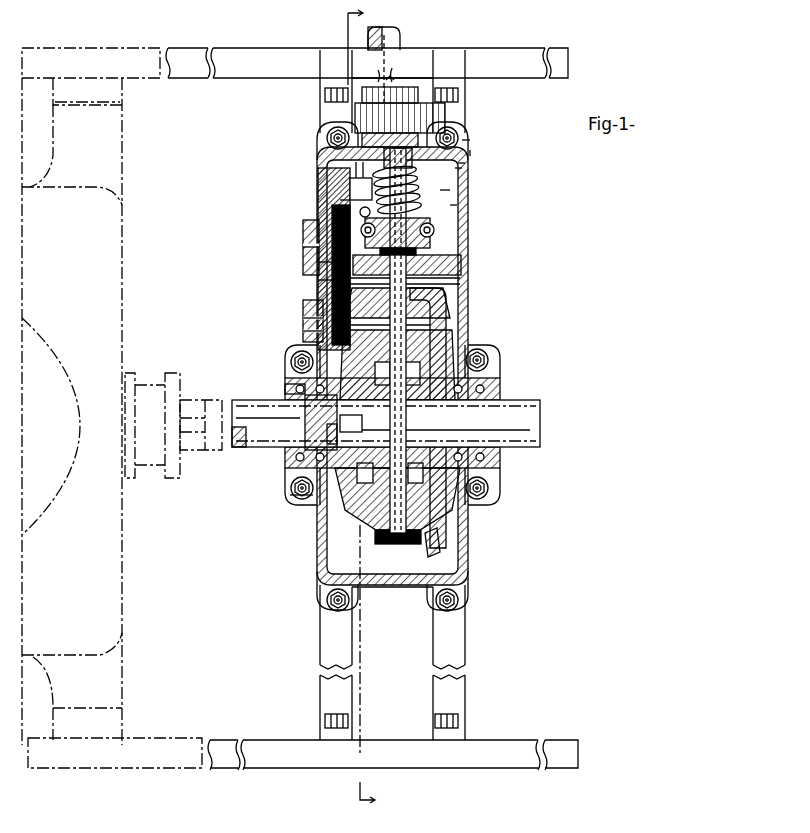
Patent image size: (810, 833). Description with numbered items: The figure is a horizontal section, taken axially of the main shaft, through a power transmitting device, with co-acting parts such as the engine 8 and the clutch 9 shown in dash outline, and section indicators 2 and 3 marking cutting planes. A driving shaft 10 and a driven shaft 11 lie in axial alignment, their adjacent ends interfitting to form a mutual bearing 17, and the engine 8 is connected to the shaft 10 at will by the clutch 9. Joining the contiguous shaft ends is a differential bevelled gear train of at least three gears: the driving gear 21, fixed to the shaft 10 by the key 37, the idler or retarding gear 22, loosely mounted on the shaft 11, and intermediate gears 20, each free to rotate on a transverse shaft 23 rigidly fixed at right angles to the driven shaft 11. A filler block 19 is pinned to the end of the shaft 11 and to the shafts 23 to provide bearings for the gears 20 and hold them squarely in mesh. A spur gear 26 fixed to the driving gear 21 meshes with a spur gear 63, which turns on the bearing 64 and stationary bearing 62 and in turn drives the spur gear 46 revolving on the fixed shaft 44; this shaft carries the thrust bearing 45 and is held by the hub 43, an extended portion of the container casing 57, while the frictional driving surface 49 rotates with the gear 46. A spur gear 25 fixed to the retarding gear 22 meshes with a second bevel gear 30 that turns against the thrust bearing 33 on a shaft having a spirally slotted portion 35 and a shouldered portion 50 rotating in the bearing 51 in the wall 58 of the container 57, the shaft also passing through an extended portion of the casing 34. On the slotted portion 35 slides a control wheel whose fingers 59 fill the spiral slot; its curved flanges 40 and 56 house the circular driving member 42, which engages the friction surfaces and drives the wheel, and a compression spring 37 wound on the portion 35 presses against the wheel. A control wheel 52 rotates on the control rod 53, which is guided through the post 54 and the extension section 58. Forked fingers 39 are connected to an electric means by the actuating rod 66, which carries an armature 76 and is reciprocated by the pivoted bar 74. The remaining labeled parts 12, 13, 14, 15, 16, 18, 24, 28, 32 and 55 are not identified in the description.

The section line 2- 2 is at (365, 44).
The section line 3- 3 is at (375, 668).
The internal combustion engine 8 is at (117, 578).
The clutch 9 is at (205, 455).
The driving shaft 10 is at (262, 448).
The driven shaft 11 is at (538, 446).
The lower flange plate 12 is at (494, 462).
The bolts 13 is at (497, 383).
The nuts 14 is at (292, 483).
The posts 15 is at (465, 636).
The cross beam 16 is at (497, 76).
The mutual bearing 17 is at (358, 429).
The post nuts 18 is at (448, 102).
The filler block 19 is at (485, 353).
The intermediate driving gear 20 is at (313, 550).
The driving gear 21 is at (363, 523).
The idler gear 22 is at (455, 346).
The transverse shaft 23 is at (397, 534).
The housing bottom lugs 24 is at (318, 562).
The spur gear 25 is at (462, 562).
The spur gear 26 is at (313, 497).
The upper flange plate 28 is at (500, 392).
The second bevel gear 30 is at (448, 292).
The gear face 32 is at (435, 320).
The thrust bearing 33 is at (462, 283).
The extended portion of the casing 34 is at (440, 268).
The spirally slotted portion 35 is at (455, 207).
The key 37 is at (292, 388).
The forked fingers 39 is at (462, 170).
The curved flange 40 is at (434, 227).
The driving member 42 is at (435, 234).
The hub 43 is at (302, 226).
The fixed shaft 44 is at (303, 240).
The thrust bearing 45 is at (318, 262).
The spur gear 46 is at (358, 211).
The frictional driving surface 49 is at (310, 280).
The shouldered portion 50 is at (478, 152).
The bearing 51 is at (465, 165).
The control wheel 52 is at (340, 202).
The control rod 53 is at (355, 173).
The post 54 is at (350, 189).
The housing top lugs 55 is at (330, 148).
The curved flange 56 is at (420, 251).
The container casing 57 is at (430, 201).
The wall of the container 58 is at (470, 143).
The fingers 59 is at (318, 250).
The stationary bearing 62 is at (303, 320).
The spur gear 63 is at (303, 320).
The bearing 64 is at (303, 337).
The actuating rod 66 is at (400, 70).
The bar 74 is at (368, 38).
The armature 76 is at (355, 117).